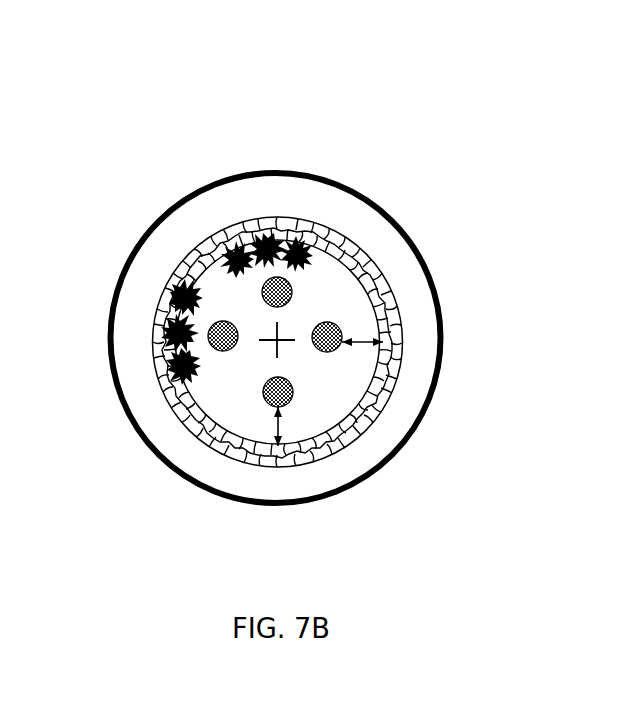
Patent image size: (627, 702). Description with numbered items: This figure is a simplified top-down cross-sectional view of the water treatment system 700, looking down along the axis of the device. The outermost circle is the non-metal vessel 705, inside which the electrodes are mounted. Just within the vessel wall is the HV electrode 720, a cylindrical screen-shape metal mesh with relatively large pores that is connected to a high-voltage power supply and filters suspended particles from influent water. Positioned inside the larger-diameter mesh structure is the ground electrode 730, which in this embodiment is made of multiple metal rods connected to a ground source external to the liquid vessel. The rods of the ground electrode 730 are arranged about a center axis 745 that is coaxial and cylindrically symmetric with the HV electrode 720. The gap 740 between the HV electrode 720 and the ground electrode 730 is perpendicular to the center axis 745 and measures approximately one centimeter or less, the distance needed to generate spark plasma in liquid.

The water treatment system 700 is at (214, 88).
The non-metal vessel 705 is at (123, 268).
The HV electrode 720 is at (155, 325).
The ground electrode 730 is at (267, 402).
The gap 740 is at (363, 342).
The center axis 745 is at (277, 340).